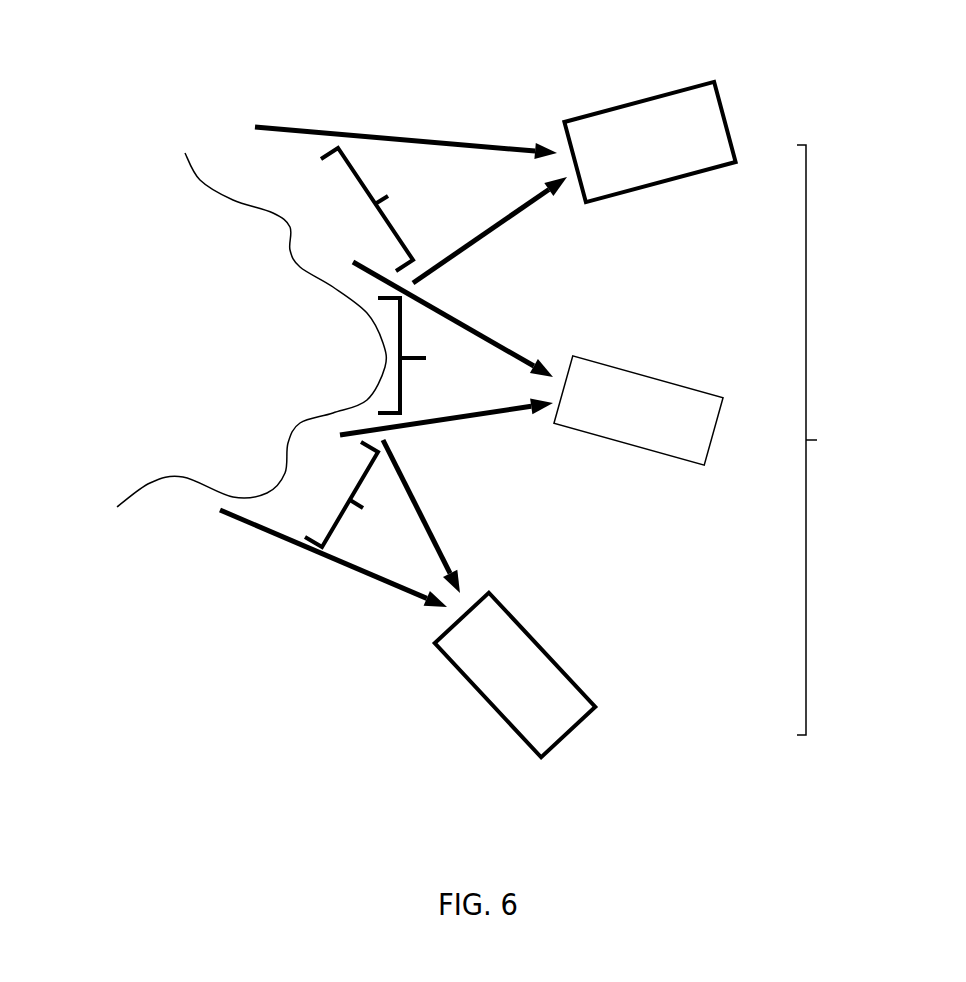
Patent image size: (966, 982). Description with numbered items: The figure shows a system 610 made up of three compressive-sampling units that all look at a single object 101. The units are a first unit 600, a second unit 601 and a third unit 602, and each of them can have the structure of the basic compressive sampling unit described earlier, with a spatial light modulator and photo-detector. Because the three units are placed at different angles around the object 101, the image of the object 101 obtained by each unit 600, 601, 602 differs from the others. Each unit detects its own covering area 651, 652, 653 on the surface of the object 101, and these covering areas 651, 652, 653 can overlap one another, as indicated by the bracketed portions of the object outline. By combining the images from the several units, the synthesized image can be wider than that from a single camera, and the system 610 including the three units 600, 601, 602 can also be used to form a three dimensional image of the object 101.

The object 101 is at (173, 177).
The unit 1 600 is at (662, 375).
The unit 2 601 is at (558, 662).
The unit 3 602 is at (672, 85).
The system 610 is at (865, 440).
The covering area 651 is at (425, 355).
The covering area 652 is at (356, 494).
The covering area 653 is at (382, 209).